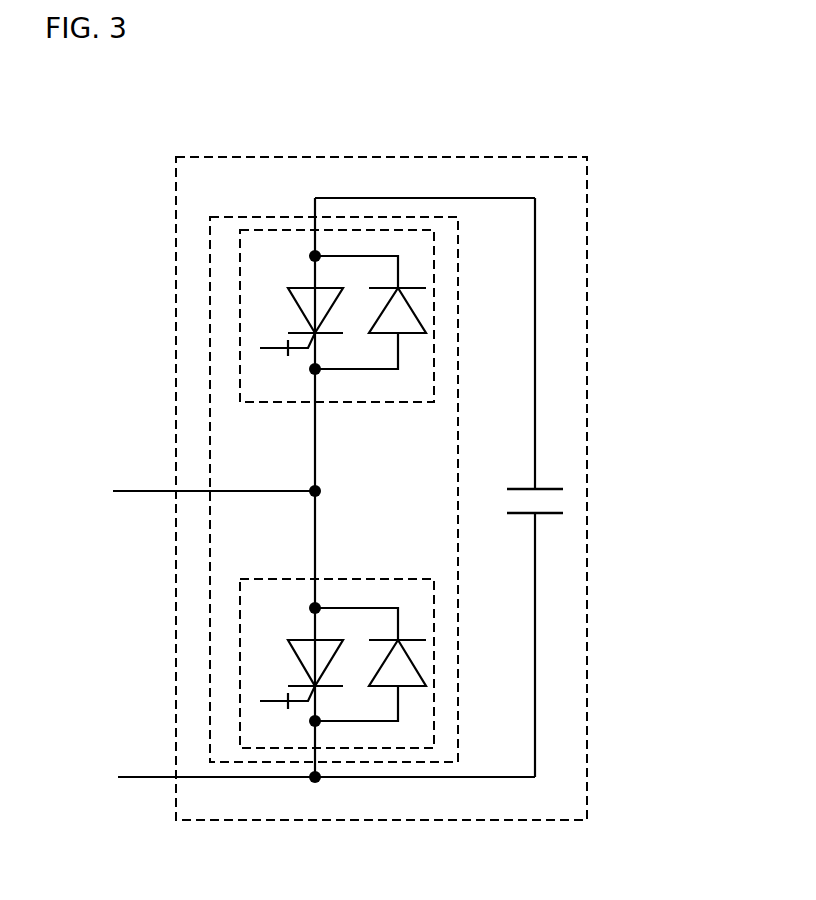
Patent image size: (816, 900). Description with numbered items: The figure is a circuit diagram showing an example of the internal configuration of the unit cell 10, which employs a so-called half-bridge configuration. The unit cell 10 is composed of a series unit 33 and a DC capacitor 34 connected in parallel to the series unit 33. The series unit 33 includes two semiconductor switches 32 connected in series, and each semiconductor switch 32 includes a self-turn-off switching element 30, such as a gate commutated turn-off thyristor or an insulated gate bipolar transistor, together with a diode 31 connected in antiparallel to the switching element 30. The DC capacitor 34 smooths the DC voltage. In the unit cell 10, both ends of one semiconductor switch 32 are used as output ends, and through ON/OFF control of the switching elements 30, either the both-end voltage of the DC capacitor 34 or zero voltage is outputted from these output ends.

The unit cell 10 is at (540, 157).
The self-turn-off switching element 30 is at (332, 287).
The diode 31 is at (413, 285).
The semiconductor switch 32 is at (240, 307).
The series unit 33 is at (210, 232).
The DC capacitor 34 is at (545, 489).